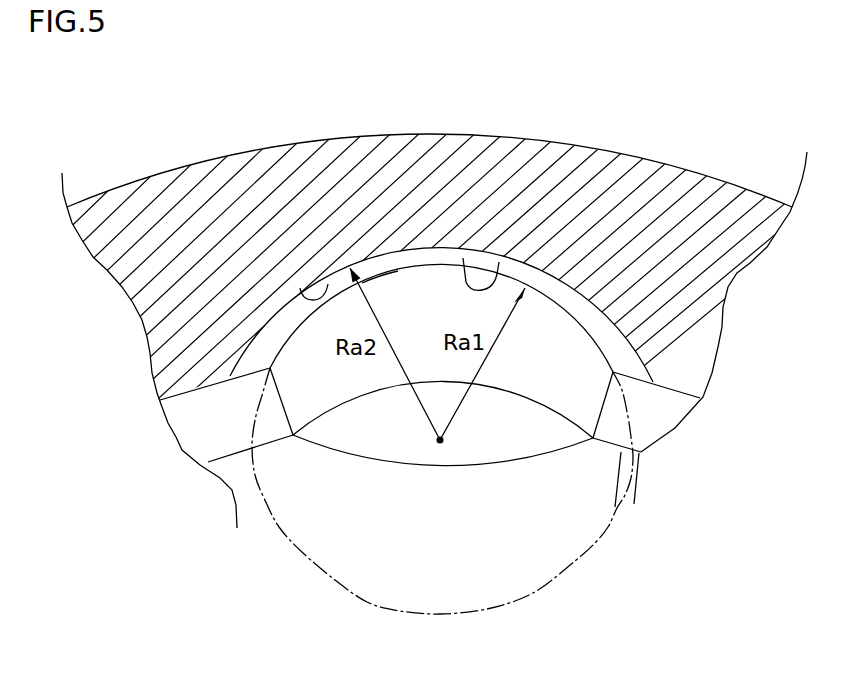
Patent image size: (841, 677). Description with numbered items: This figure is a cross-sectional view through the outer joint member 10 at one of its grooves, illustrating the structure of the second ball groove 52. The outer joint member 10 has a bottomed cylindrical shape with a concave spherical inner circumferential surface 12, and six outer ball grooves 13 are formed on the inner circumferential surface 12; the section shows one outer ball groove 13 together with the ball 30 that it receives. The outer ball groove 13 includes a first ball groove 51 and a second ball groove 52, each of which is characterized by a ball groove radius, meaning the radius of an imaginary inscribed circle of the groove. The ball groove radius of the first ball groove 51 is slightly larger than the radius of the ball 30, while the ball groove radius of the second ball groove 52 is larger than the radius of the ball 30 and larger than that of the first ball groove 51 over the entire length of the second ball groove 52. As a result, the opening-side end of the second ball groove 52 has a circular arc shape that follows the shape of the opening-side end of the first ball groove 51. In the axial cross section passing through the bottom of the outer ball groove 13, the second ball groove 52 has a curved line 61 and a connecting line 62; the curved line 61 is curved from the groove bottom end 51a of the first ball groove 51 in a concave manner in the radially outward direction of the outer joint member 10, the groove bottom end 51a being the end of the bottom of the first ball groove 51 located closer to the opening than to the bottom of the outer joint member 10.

The outer joint member 10 is at (131, 164).
The inner circumferential surface 12 is at (615, 507).
The outer ball groove 13 is at (553, 360).
The ball 30 is at (588, 553).
The first ball groove 51 is at (473, 287).
The groove bottom end 51a is at (427, 265).
The second ball groove 52 is at (310, 181).
The curved line 61 is at (380, 275).
The connecting line 62 is at (305, 288).